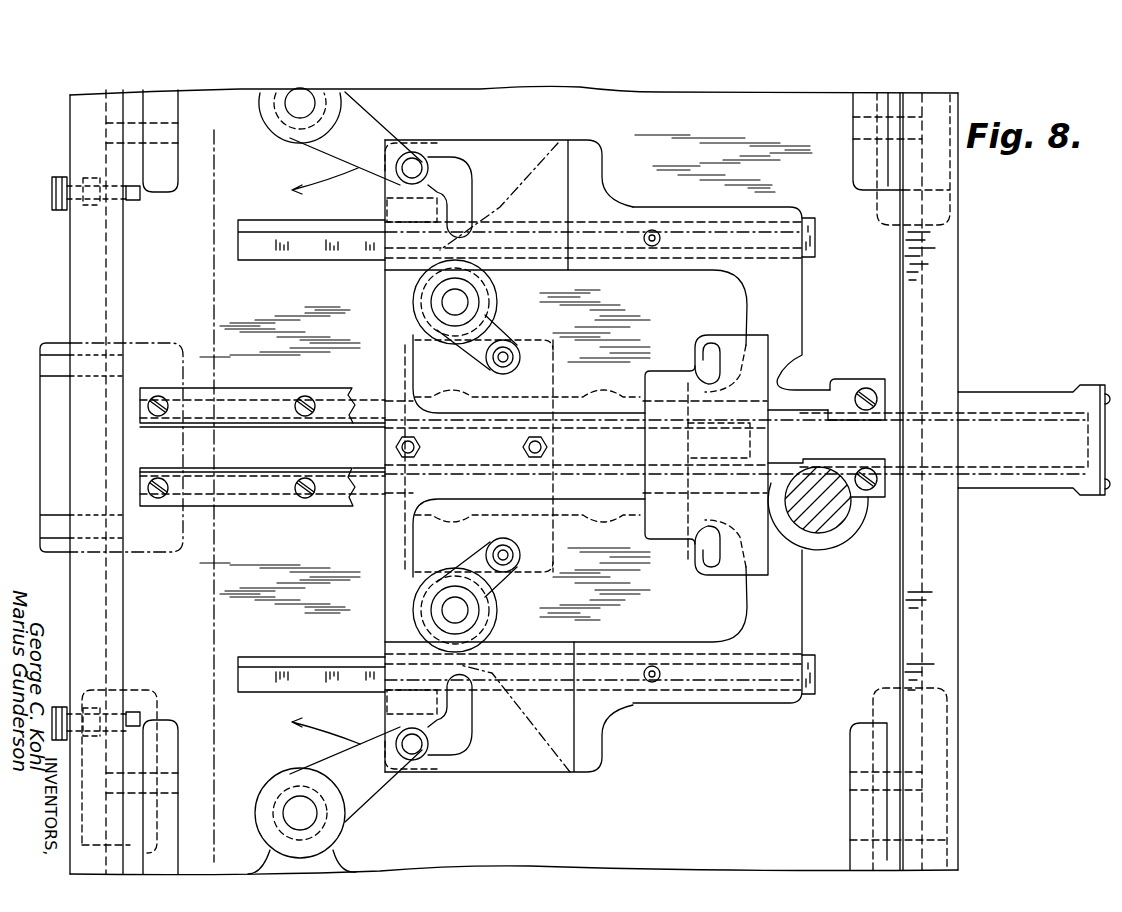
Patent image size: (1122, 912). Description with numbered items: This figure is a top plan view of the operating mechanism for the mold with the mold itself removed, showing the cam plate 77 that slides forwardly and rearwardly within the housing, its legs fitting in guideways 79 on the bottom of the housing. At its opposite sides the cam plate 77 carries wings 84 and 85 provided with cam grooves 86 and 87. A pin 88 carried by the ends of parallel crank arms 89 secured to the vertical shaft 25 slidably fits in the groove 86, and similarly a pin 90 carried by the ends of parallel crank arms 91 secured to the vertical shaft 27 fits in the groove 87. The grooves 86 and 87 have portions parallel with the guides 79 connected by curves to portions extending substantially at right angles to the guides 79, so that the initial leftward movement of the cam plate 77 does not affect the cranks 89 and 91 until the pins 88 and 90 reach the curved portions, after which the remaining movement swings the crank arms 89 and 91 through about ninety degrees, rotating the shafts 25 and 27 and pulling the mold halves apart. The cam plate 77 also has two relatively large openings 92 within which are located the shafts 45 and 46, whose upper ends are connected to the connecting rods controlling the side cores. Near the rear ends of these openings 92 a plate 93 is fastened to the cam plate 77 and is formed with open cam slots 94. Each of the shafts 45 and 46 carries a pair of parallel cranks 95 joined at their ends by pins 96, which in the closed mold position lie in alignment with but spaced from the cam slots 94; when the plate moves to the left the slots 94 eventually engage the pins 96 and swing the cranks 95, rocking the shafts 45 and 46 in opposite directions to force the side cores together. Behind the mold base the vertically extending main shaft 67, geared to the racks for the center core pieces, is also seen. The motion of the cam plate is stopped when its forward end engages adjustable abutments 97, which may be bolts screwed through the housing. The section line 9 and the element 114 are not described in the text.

The section line 9- 9 is at (206, 153).
The vertical shaft 25 is at (300, 115).
The vertical shaft 27 is at (313, 815).
The shaft 45 is at (462, 303).
The shaft 46 is at (462, 616).
The main shaft 67 is at (833, 517).
The cam plate 77 is at (795, 283).
The guideways 79 is at (296, 256).
The wing 84 is at (508, 150).
The wing 85 is at (526, 768).
The cam groove 86 is at (453, 158).
The cam groove 87 is at (466, 772).
The pin 88 is at (416, 165).
The parallel crank arms 89 is at (376, 139).
The pin 90 is at (416, 750).
The parallel crank arms 91 is at (372, 798).
The openings 92 is at (660, 268).
The plate 93 is at (758, 362).
The cam slots 94 is at (701, 363).
The parallel cranks 95 is at (470, 338).
The pins 96 is at (507, 357).
The adjustable abutments 97 is at (140, 197).
The rod 114 is at (1022, 422).